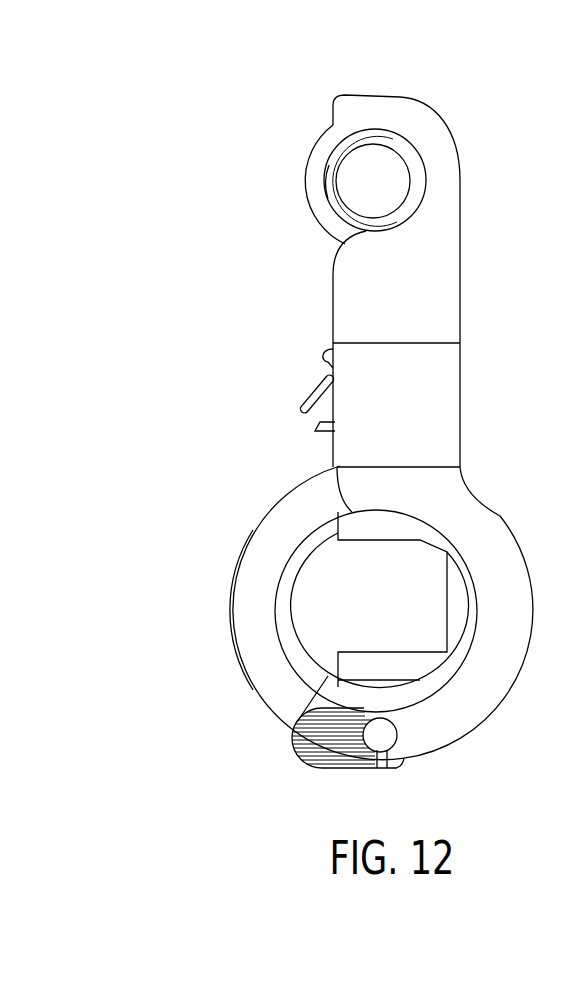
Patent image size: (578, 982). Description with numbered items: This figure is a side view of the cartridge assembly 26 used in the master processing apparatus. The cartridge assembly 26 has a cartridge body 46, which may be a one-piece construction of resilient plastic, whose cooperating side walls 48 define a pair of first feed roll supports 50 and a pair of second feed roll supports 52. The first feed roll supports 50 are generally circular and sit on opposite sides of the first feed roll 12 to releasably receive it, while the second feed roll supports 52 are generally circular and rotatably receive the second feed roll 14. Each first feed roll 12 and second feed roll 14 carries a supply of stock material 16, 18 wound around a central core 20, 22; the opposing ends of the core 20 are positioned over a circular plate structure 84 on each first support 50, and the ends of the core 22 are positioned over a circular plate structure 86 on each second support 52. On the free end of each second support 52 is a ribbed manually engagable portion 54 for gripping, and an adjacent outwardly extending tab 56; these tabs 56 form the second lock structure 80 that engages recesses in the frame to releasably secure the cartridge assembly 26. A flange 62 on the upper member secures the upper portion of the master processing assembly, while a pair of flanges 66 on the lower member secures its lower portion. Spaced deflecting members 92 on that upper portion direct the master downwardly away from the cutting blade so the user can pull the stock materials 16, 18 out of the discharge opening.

The first feed roll 12 is at (328, 127).
The second feed roll 14 is at (260, 693).
The stock material 16 is at (320, 157).
The stock material 18 is at (257, 643).
The central core 20 is at (327, 195).
The central core 22 is at (287, 570).
The cartridge assembly 26 is at (488, 138).
The cartridge body 46 is at (451, 307).
The side walls 48 is at (447, 403).
The first feed roll supports 50 is at (380, 177).
The second feed roll supports 52 is at (427, 603).
The manually engagable portion 54 is at (295, 753).
The outwardly extending tab 56 is at (388, 733).
The flange 62 is at (330, 357).
The flanges 66 is at (315, 428).
The second lock structure 80 is at (403, 764).
The circular plate structure 84 is at (355, 170).
The circular plate structure 86 is at (403, 570).
The deflecting members 92 is at (308, 402).